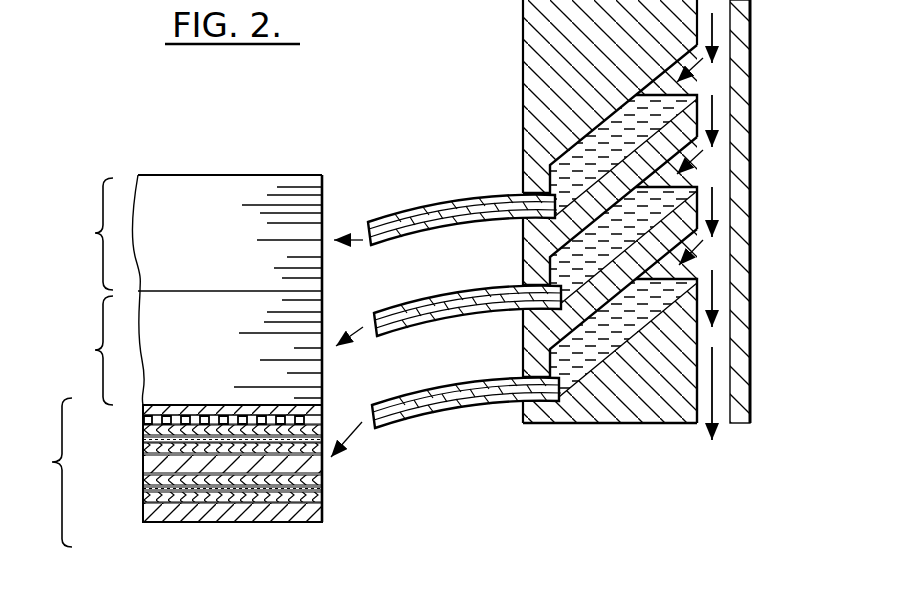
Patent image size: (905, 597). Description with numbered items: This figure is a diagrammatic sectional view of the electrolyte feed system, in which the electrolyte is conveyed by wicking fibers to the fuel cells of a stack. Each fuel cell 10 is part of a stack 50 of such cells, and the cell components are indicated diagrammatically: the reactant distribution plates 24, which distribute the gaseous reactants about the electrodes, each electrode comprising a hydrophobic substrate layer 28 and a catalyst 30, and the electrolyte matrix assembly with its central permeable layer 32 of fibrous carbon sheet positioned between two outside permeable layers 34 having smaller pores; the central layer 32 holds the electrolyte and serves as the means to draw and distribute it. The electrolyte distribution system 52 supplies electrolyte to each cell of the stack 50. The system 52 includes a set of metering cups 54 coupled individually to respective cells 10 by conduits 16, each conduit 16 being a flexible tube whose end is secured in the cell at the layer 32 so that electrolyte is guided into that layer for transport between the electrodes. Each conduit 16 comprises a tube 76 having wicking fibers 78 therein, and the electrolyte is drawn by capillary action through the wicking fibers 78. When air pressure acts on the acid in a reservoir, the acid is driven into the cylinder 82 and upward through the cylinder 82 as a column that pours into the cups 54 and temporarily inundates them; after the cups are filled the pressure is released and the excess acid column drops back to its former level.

The fuel cell 10 is at (170, 361).
The conduit 16 is at (494, 406).
The reactant distribution plate 24 is at (146, 409).
The hydrophobic substrate layer 28 is at (146, 430).
The catalyst 30 is at (146, 440).
The central permeable layer 32 is at (146, 464).
The outside permeable layer 34 is at (146, 448).
The stack 50 is at (300, 527).
The electrolyte distribution system 52 is at (764, 350).
The metering cup 54 is at (678, 97).
The tube 76 is at (467, 198).
The wicking fibers 78 is at (401, 229).
The cylinder 82 is at (718, 6).